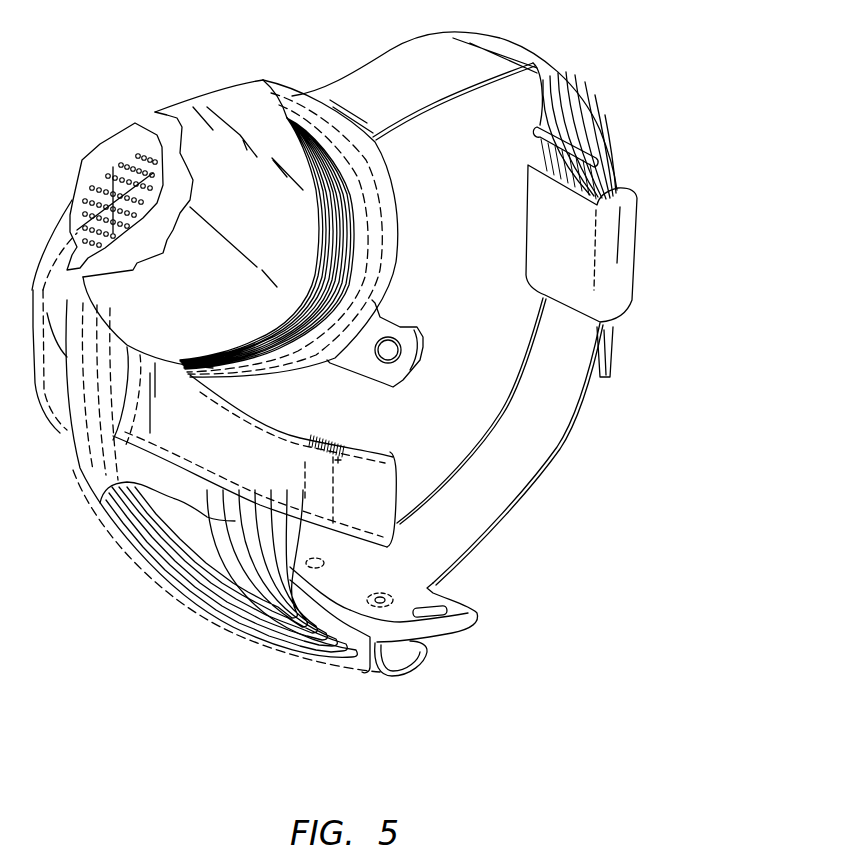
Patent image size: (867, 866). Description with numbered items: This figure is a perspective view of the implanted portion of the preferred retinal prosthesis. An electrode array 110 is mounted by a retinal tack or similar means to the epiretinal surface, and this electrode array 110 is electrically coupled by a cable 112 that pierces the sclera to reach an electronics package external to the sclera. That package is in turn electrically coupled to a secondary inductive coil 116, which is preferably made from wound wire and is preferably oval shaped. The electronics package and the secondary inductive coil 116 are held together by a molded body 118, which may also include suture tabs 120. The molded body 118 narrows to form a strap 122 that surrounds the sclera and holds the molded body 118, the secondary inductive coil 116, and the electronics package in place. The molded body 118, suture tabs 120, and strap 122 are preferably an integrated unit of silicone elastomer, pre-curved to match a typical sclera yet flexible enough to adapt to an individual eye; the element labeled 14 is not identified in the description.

The ear cup 14 is at (258, 225).
The electrode array 110 is at (117, 157).
The cable 112 is at (270, 480).
The secondary inductive coil 116 is at (193, 608).
The molded body 118 is at (322, 387).
The suture tabs 120 is at (420, 332).
The strap 122 is at (538, 60).